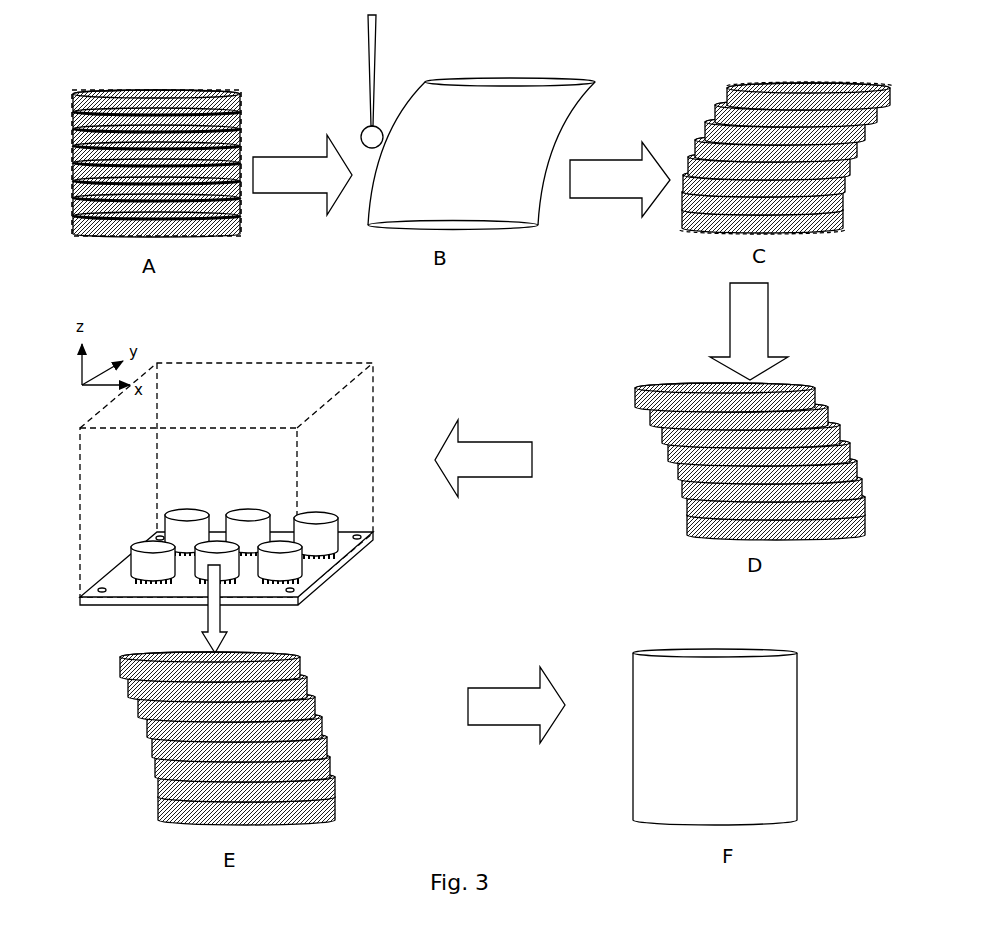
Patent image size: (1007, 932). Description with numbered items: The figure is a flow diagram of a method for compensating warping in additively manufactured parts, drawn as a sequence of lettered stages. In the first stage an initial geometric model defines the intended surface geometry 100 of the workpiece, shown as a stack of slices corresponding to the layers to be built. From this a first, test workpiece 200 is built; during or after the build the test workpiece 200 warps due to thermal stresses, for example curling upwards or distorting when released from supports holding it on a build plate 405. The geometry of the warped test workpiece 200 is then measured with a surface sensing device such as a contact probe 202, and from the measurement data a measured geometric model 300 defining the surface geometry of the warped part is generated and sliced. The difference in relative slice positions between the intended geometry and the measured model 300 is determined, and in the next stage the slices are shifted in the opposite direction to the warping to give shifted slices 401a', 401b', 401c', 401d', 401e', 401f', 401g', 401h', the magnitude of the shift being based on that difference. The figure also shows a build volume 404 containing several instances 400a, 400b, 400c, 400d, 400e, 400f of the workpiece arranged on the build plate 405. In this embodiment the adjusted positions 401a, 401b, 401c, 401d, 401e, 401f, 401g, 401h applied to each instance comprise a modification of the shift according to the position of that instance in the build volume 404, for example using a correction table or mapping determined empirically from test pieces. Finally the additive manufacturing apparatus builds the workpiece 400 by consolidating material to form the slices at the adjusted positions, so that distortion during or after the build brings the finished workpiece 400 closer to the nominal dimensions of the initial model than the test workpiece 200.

The surface geometry 100 is at (123, 88).
The test workpiece 200 is at (572, 78).
The contact probe 202 is at (380, 32).
The measured geometric model 300 is at (848, 80).
The build volume 404 is at (300, 362).
The build plate 405 is at (350, 555).
The workpiece 400 is at (800, 725).
The instance of the workpiece 400a is at (148, 543).
The instance of the workpiece 400b is at (183, 512).
The instance of the workpiece 400c is at (245, 513).
The instance of the workpiece 400d is at (313, 518).
The instance of the workpiece 400e is at (277, 548).
The instance of the workpiece 400f is at (223, 558).
The shifted slice 401a' is at (687, 395).
The shifted slice 401b' is at (781, 416).
The shifted slice 401c' is at (701, 434).
The shifted slice 401d' is at (799, 452).
The shifted slice 401e' is at (811, 488).
The shifted slice 401f' is at (709, 470).
The shifted slice 401g' is at (716, 506).
The shifted slice 401h' is at (816, 525).
The adjusted position 401a is at (165, 667).
The adjusted position 401b is at (262, 687).
The adjusted position 401c is at (172, 707).
The adjusted position 401d is at (280, 727).
The adjusted position 401e is at (290, 767).
The adjusted position 401f is at (178, 747).
The adjusted position 401g is at (183, 787).
The adjusted position 401h is at (293, 808).